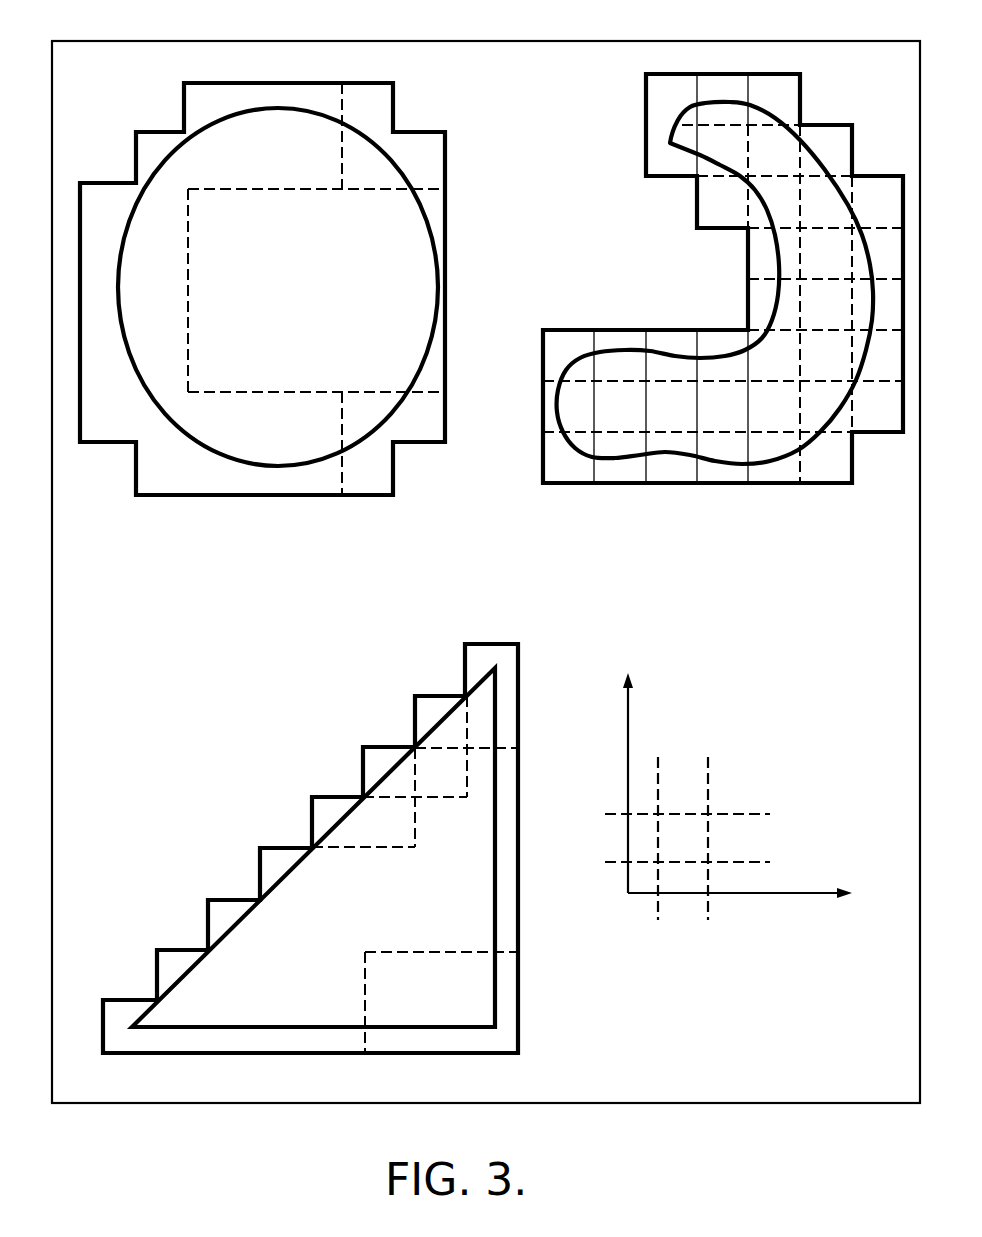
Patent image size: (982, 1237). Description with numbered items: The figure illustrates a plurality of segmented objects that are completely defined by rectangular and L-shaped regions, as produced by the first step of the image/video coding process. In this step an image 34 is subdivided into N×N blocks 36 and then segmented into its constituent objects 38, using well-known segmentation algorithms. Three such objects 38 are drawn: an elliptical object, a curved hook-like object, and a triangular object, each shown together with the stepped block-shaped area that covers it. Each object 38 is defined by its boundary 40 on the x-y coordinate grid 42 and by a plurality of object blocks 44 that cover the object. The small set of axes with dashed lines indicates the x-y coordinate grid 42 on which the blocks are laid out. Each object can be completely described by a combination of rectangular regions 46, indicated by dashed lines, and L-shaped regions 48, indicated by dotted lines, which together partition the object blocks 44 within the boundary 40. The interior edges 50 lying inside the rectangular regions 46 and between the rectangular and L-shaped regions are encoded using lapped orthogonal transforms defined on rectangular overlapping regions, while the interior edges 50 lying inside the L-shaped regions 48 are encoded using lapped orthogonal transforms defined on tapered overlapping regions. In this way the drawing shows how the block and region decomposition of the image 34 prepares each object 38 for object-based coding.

The image 34 is at (403, 42).
The N×N blocks 36 is at (338, 57).
The objects 38 is at (427, 221).
The boundary 40 is at (704, 299).
The x-y coordinate grid 42 is at (732, 813).
The object blocks 44 is at (813, 385).
The rectangular regions 46 is at (688, 283).
The L-shaped regions 48 is at (722, 196).
The interior edges 50 is at (615, 435).